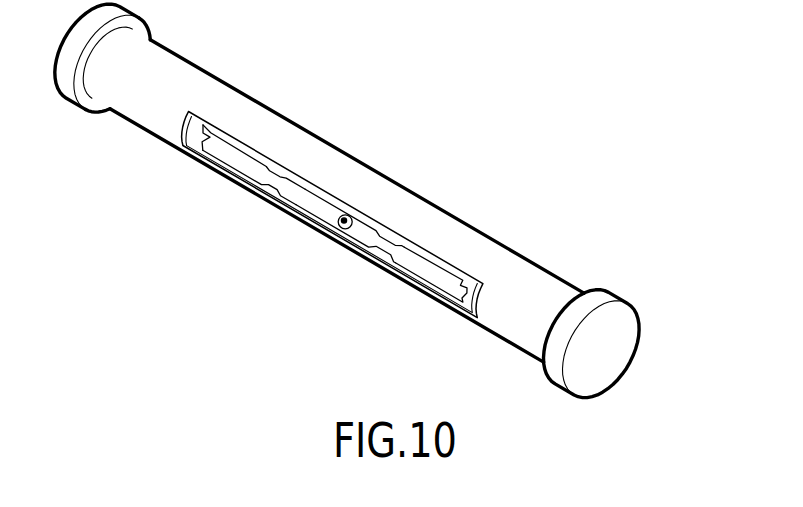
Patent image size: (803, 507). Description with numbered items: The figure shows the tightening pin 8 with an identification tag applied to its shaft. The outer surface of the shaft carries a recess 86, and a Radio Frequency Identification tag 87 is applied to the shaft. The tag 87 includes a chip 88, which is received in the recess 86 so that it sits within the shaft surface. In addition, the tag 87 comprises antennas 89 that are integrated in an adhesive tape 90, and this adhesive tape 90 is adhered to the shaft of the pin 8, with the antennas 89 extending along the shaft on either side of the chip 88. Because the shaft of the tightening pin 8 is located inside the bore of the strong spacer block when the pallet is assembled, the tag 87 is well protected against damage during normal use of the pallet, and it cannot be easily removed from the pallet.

The tightening pin 8 is at (556, 208).
The recess 86 is at (338, 225).
The Radio Frequency Identification (RFID) tag 87 is at (370, 240).
The chip 88 is at (344, 220).
The antennas 89 is at (228, 140).
The adhesive tape 90 is at (273, 193).